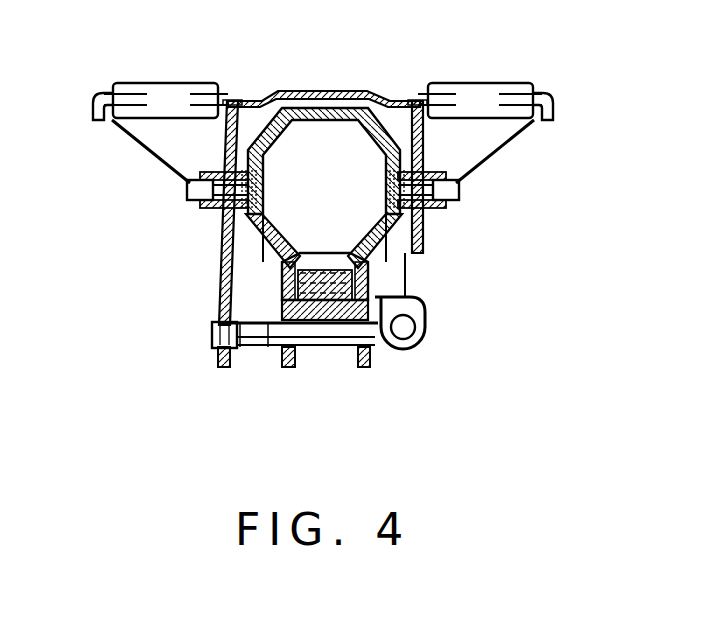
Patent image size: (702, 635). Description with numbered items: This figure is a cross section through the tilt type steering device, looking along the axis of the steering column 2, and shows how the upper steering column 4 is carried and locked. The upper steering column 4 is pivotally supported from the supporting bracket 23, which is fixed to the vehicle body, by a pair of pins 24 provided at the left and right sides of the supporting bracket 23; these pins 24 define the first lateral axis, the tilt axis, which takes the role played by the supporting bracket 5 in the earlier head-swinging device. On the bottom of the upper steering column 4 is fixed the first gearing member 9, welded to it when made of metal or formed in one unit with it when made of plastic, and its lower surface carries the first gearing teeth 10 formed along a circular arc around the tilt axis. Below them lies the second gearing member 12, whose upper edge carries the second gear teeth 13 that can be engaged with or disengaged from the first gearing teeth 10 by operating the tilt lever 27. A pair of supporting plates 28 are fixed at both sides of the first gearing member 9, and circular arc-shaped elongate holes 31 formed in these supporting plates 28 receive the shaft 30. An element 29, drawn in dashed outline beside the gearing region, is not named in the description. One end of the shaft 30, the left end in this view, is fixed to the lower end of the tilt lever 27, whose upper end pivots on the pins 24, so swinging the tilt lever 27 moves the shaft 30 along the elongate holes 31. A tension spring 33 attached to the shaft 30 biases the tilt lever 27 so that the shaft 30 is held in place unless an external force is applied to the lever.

The steering column 2 is at (313, 91).
The upper steering column 4 is at (345, 92).
The supporting bracket 5 is at (293, 190).
The first gearing member 9 is at (420, 297).
The first gearing teeth 10 is at (424, 309).
The second gearing member 12 is at (213, 317).
The second gear teeth 13 is at (283, 298).
The supporting bracket 23 is at (427, 148).
The pins 24 is at (183, 187).
The tilt lever 27 is at (217, 240).
The supporting plates 28 is at (218, 308).
The cup 29 is at (378, 270).
The shaft 30 is at (252, 350).
The elongate holes 31 is at (390, 350).
The tension spring 33 is at (240, 352).